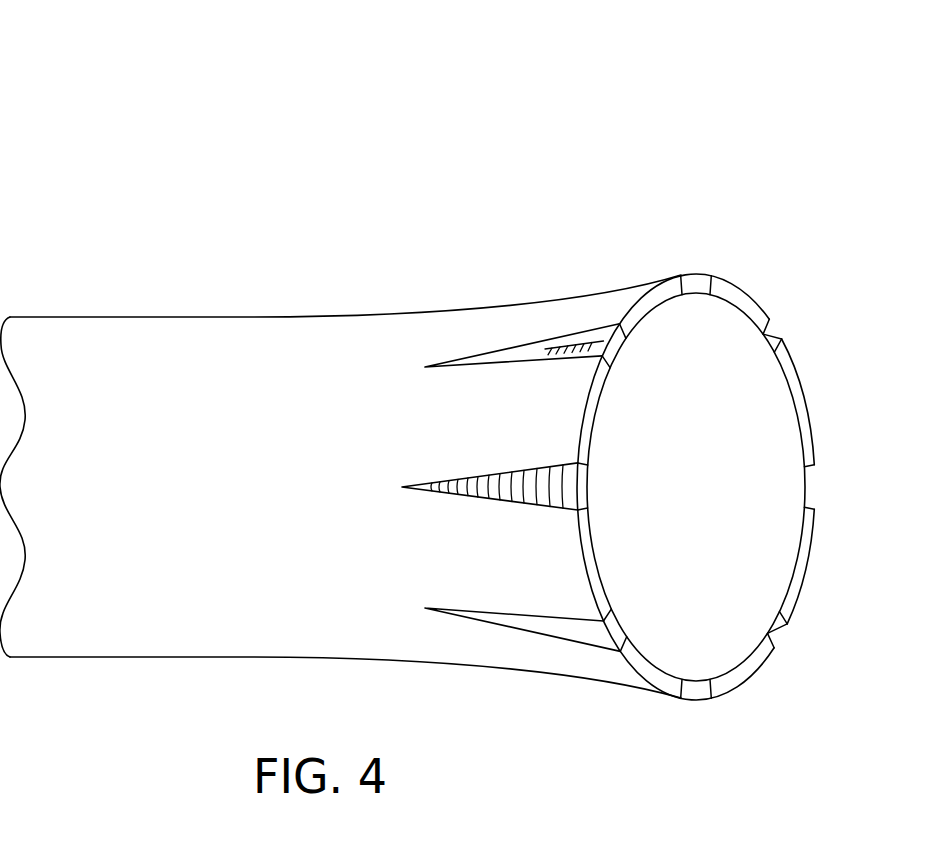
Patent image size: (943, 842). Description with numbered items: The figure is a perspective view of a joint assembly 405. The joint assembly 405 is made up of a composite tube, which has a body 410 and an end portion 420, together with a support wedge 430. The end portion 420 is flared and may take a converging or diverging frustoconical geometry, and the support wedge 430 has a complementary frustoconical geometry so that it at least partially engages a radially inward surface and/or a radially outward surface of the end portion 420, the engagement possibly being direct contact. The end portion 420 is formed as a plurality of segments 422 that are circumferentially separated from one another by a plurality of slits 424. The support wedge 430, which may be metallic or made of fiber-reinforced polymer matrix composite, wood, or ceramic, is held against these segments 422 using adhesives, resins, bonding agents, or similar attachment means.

The joint assembly 405 is at (152, 160).
The body 410 is at (230, 355).
The end portion 420 is at (813, 215).
The plurality of segments 422 is at (545, 425).
The plurality of slits 424 is at (783, 647).
The support wedge 430 is at (727, 551).